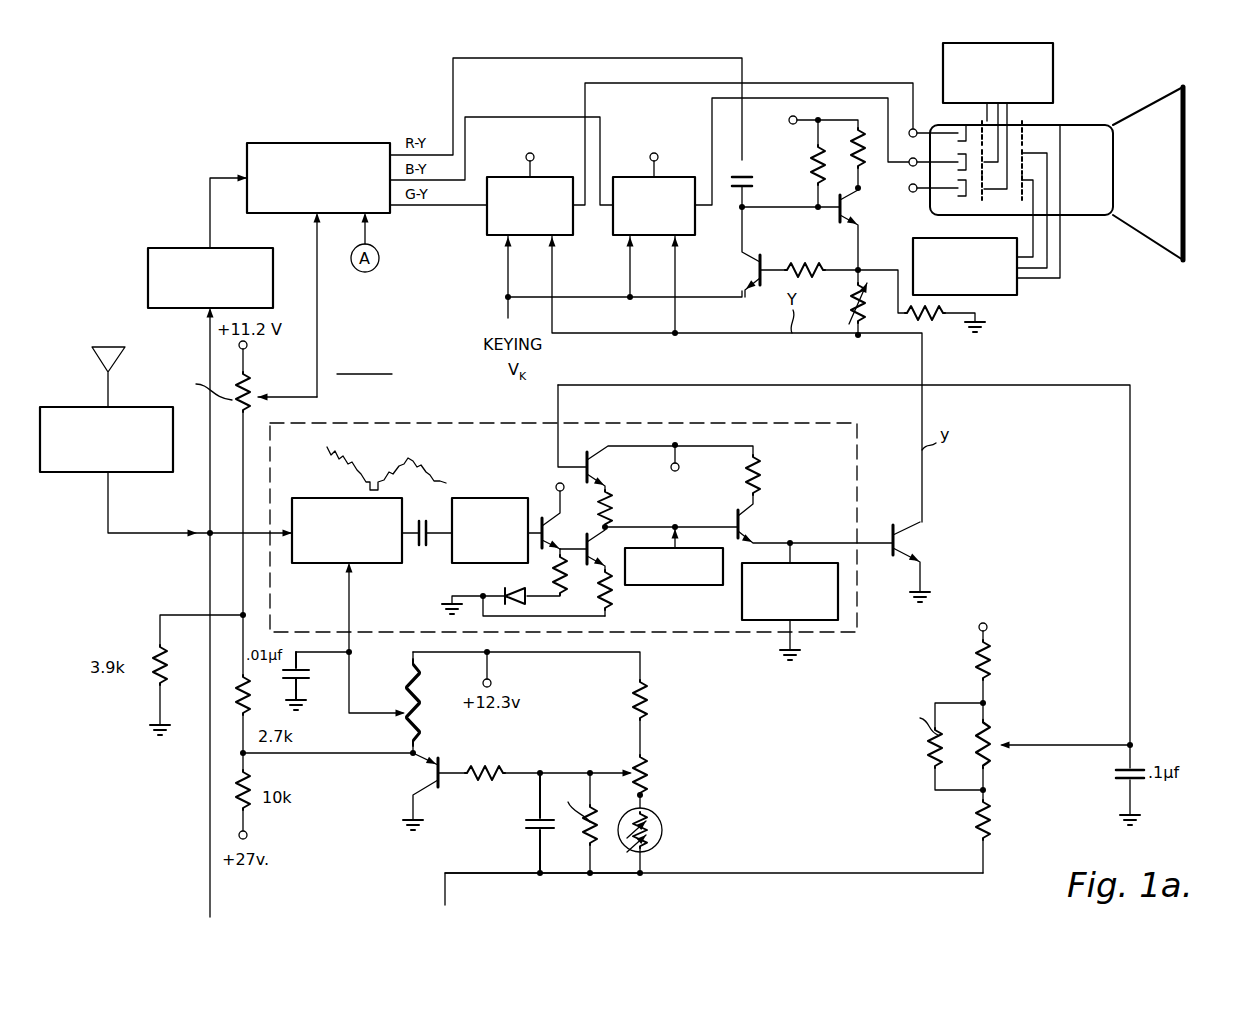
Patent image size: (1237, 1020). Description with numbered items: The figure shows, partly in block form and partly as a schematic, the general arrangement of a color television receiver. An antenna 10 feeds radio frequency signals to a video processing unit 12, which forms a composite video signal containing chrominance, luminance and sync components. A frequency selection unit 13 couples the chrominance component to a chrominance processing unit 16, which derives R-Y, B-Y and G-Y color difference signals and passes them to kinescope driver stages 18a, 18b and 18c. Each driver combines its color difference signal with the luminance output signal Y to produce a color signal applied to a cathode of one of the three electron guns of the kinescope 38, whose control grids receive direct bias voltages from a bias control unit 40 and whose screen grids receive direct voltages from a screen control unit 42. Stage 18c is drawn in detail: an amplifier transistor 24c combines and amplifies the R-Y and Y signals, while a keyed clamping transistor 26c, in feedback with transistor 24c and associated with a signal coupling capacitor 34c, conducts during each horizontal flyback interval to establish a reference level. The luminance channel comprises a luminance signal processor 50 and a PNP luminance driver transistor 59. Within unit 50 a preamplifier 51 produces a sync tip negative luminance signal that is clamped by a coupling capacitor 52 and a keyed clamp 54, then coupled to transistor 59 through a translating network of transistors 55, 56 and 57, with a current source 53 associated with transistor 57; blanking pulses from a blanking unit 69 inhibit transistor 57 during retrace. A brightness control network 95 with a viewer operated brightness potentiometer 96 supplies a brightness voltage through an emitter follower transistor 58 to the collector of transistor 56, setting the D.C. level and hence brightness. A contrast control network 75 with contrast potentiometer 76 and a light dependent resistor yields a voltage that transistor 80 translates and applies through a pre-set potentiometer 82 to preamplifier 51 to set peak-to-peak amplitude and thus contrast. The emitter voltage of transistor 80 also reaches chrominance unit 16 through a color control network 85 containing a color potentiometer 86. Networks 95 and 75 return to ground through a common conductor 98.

The antenna 10 is at (108, 347).
The video processing unit 12 is at (58, 407).
The frequency selection unit 13 is at (176, 248).
The chrominance processing unit 16 is at (316, 143).
The kinescope driver stage 18a is at (533, 92).
The kinescope driver stage 18b is at (665, 106).
The kinescope driver stage 18c is at (798, 187).
The amplifier transistor 24c is at (906, 226).
The keyed clamping transistor 26c is at (733, 279).
The signal coupling capacitor 34c is at (734, 195).
The kinescope 38 is at (1144, 92).
The bias control unit 40 is at (1053, 74).
The screen control unit 42 is at (1020, 296).
The luminance signal processor 50 is at (857, 633).
The preamplifier 51 is at (313, 563).
The coupling capacitor 52 is at (425, 548).
The current source 53 is at (745, 615).
The keyed clamp 54 is at (486, 498).
The transistor 55 is at (586, 539).
The transistor 56 is at (620, 561).
The transistor 57 is at (782, 534).
The emitter follower transistor 58 is at (629, 474).
The luminance signal driver transistor 59 is at (947, 560).
The blanking unit 69 is at (674, 573).
The contrast control network 75 is at (620, 724).
The contrast control potentiometer 76 is at (695, 786).
The transistor 80 is at (420, 780).
The pre-set potentiometer 82 is at (391, 696).
The color control network 85 is at (373, 404).
The color control potentiometer 86 is at (296, 369).
The brightness control network 95 is at (920, 756).
The brightness control potentiometer 96 is at (1033, 739).
The common conductor 98 is at (521, 877).